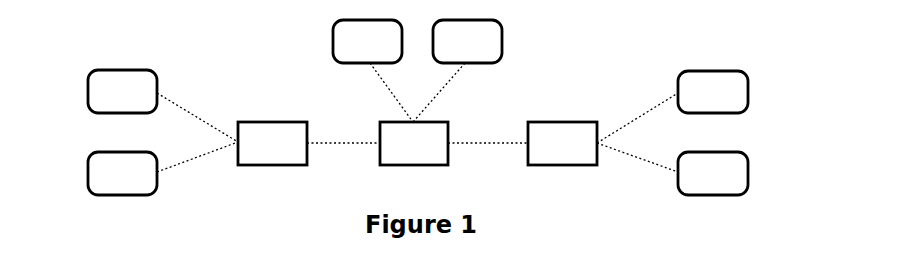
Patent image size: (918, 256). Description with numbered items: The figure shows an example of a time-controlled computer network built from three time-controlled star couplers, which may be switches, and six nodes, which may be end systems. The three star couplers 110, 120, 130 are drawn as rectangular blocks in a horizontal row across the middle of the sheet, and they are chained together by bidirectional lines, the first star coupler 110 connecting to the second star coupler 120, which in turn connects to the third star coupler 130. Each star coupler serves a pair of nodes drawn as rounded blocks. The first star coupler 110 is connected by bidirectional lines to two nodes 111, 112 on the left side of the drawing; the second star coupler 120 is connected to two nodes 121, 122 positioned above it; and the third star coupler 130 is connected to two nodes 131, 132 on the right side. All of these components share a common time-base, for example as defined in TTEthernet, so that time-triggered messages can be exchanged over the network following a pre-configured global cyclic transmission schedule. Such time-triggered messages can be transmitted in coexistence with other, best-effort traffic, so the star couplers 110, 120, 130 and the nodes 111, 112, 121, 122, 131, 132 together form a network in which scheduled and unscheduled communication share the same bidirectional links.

The time-controlled star coupler 110 is at (272, 166).
The node 111 is at (85, 177).
The node 112 is at (85, 92).
The time-controlled star coupler 120 is at (414, 166).
The node 121 is at (328, 40).
The node 122 is at (508, 40).
The time-controlled star coupler 130 is at (563, 166).
The node 131 is at (752, 92).
The node 132 is at (752, 177).